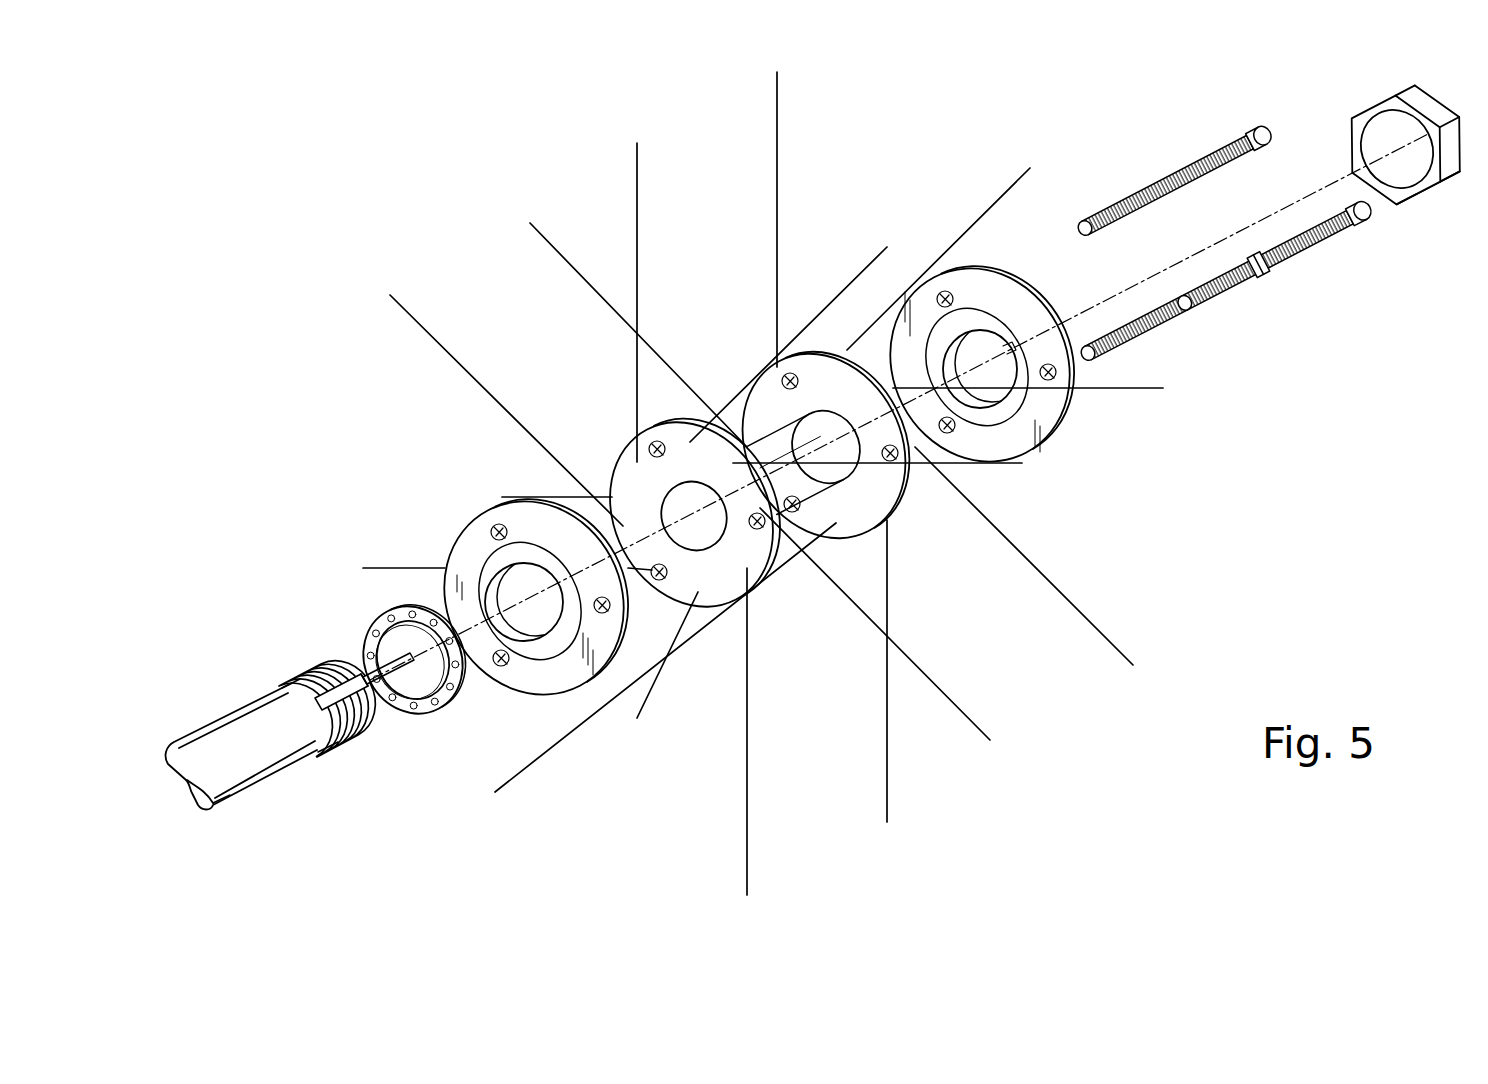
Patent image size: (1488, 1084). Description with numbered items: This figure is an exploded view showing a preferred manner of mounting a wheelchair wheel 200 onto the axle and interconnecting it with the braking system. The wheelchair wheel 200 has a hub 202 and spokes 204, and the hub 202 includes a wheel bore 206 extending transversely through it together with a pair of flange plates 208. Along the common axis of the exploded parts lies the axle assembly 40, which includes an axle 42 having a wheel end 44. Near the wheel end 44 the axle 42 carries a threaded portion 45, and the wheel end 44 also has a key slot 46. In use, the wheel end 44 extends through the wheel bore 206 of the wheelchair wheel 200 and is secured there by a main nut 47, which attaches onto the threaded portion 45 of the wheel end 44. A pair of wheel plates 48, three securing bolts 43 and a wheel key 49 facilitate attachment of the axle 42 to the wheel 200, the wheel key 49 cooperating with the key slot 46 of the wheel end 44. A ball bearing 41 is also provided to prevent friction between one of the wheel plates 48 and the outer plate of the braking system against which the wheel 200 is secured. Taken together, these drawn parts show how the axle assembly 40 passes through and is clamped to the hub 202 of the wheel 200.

The axle assembly 40 is at (312, 783).
The ball bearing 41 is at (427, 713).
The axle 42 is at (217, 720).
The securing bolts 43 is at (1233, 295).
The wheel end 44 is at (333, 657).
The threaded portion 45 is at (287, 687).
The key slot 46 is at (345, 742).
The main nut 47 is at (1418, 200).
The wheel plates 48 is at (468, 523).
The wheel key 49 is at (365, 677).
The wheelchair wheel 200 is at (902, 503).
The hub 202 is at (768, 428).
The spokes 204 is at (837, 295).
The wheel bore 206 is at (636, 460).
The flange plates 208 is at (847, 563).